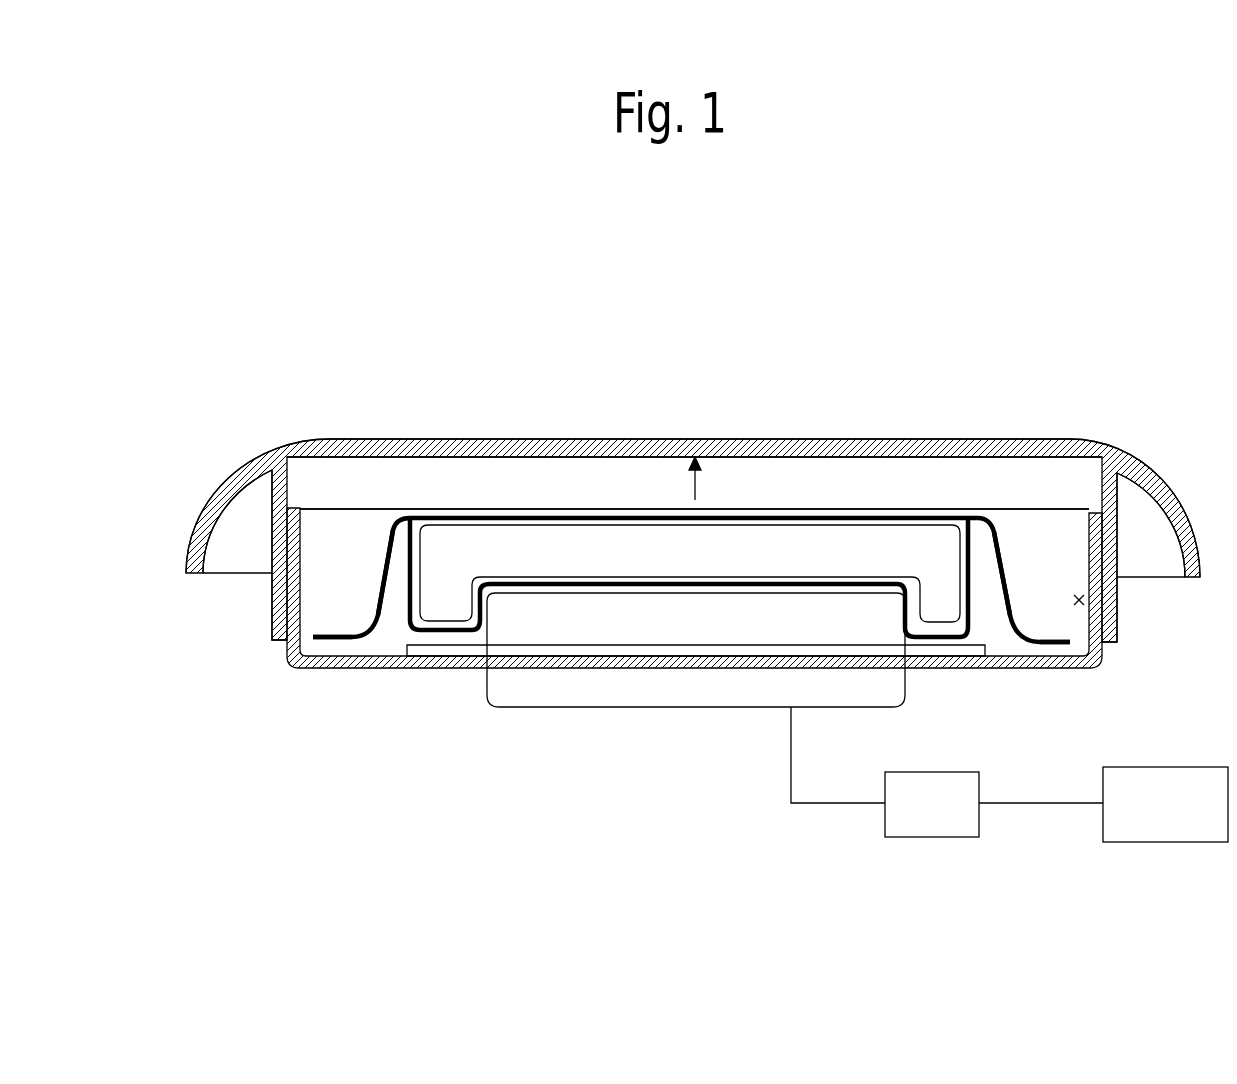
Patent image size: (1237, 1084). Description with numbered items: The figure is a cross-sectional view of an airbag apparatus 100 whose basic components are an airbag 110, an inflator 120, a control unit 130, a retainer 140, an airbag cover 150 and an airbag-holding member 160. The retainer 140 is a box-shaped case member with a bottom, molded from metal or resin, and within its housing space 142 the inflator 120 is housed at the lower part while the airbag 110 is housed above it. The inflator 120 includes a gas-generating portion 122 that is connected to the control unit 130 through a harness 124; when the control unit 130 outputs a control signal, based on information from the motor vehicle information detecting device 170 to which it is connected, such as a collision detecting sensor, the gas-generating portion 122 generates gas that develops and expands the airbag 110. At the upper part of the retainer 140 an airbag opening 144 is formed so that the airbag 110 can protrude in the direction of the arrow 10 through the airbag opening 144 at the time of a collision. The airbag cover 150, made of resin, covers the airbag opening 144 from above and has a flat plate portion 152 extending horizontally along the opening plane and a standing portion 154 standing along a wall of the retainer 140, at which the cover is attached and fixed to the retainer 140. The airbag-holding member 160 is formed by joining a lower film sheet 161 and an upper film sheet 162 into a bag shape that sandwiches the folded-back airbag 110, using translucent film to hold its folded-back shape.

The airbag apparatus 100 is at (755, 373).
The arrow 10 is at (716, 478).
The airbag 110 is at (570, 540).
The inflator 120 is at (686, 692).
The gas-generating portion 122 is at (696, 650).
The harness 124 is at (822, 805).
The control unit 130 is at (932, 838).
The retainer 140 is at (383, 667).
The housing space 142 is at (1078, 607).
The airbag opening 144 is at (862, 512).
The airbag cover 150 is at (483, 434).
The flat plate portion 152 is at (363, 437).
The standing portion 154 is at (272, 600).
The airbag-holding member 160 is at (947, 517).
The lower film sheet 161 is at (330, 643).
The upper film sheet 162 is at (387, 560).
The motor vehicle information detecting device 170 is at (1150, 843).